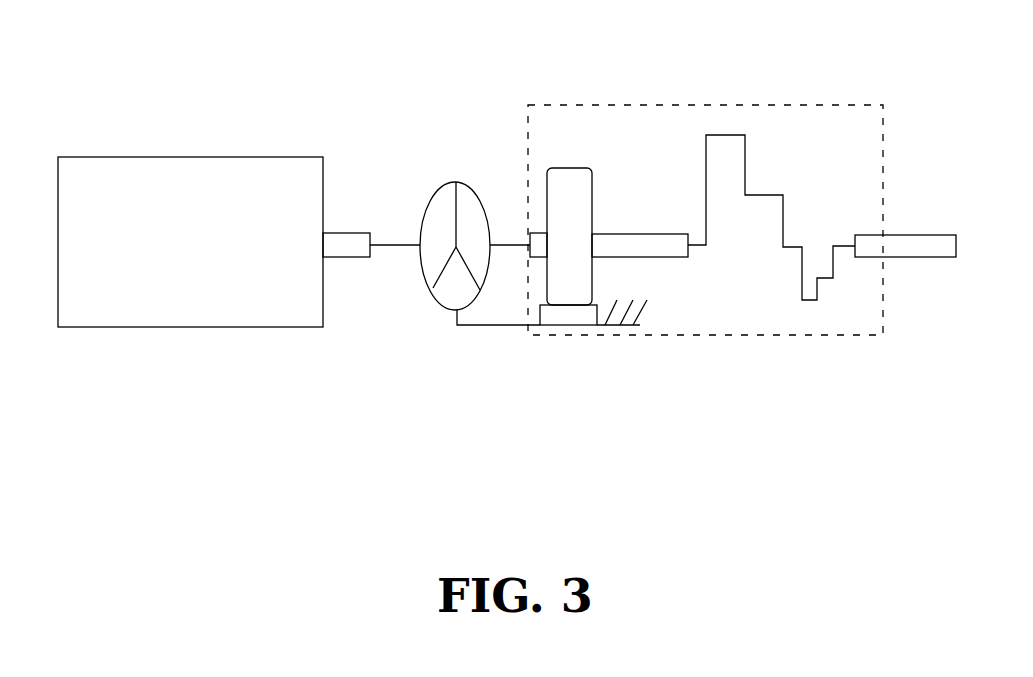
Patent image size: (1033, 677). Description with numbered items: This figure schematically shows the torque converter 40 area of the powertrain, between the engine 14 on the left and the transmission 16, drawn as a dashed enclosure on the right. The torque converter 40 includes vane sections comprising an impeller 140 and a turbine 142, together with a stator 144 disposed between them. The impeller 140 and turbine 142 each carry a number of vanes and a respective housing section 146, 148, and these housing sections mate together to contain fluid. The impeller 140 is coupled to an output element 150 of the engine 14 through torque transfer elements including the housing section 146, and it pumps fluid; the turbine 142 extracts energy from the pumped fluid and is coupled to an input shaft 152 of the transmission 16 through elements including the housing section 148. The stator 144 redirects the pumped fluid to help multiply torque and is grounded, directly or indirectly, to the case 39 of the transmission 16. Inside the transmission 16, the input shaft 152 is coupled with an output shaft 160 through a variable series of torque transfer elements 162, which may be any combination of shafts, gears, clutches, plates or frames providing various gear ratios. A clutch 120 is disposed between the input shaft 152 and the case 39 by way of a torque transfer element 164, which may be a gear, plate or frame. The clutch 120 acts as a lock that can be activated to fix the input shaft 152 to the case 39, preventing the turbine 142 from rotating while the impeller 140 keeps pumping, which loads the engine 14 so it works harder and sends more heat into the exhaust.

The engine 14 is at (179, 252).
The transmission 16 is at (664, 104).
The case 39 is at (633, 327).
The torque converter 40 is at (415, 332).
The clutch 120 is at (570, 315).
The impeller 140 is at (437, 243).
The turbine 142 is at (468, 213).
The stator 144 is at (447, 293).
The housing section 146 is at (443, 185).
The housing section 148 is at (487, 273).
The output element 150 is at (357, 233).
The input shaft 152 is at (540, 233).
The output shaft 160 is at (918, 257).
The torque transfer elements 162 is at (807, 300).
The torque transfer element 164 is at (577, 213).